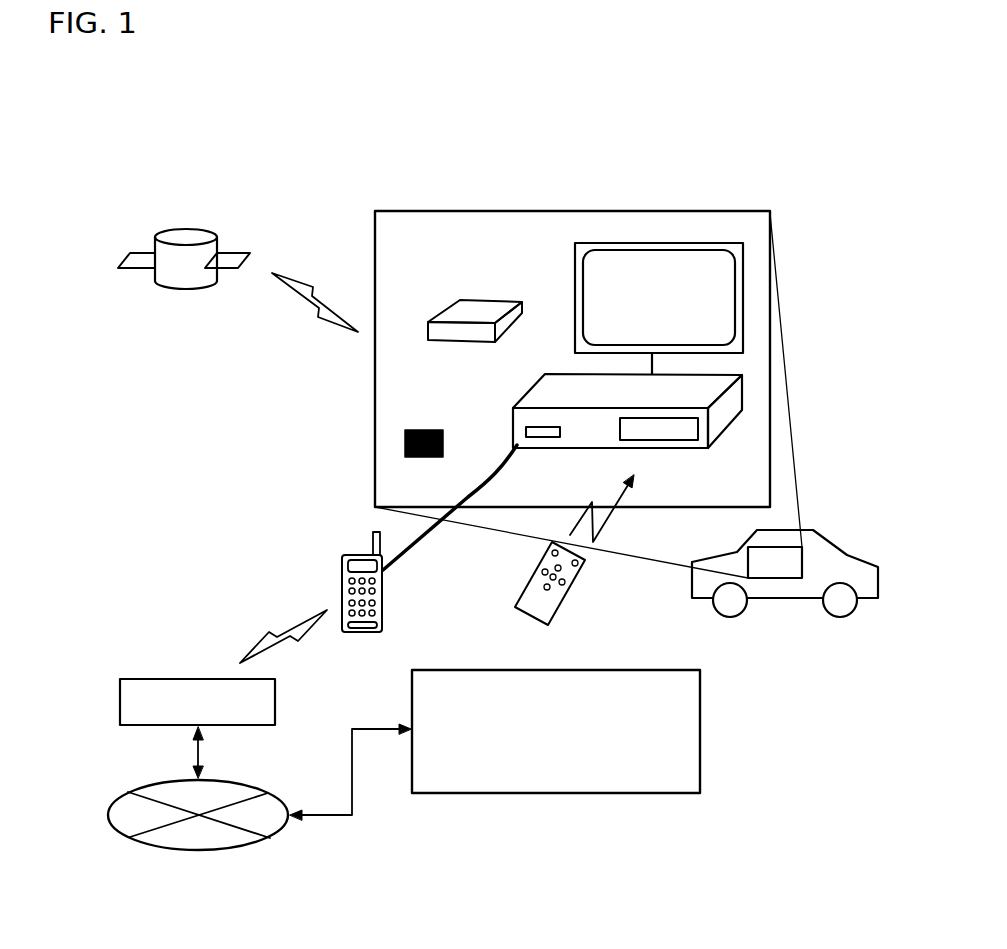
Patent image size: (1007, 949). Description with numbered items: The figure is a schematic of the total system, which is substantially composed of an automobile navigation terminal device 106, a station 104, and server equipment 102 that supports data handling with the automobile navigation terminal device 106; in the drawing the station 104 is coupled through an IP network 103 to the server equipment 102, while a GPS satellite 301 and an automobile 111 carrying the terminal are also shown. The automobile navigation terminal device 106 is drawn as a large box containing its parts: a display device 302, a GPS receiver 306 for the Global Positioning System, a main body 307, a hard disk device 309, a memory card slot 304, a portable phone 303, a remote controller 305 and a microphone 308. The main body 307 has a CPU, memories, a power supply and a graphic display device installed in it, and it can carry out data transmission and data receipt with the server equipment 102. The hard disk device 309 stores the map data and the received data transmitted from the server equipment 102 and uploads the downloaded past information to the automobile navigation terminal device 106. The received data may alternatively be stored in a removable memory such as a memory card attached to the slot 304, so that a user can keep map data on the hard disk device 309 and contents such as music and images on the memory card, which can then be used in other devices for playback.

The server equipment 102 is at (702, 733).
The IP network 103 is at (140, 842).
The station 104 is at (138, 678).
The automobile navigation terminal device 106 is at (375, 397).
The automobile 111 is at (785, 588).
The GPS satellite 301 is at (177, 290).
The display device 302 is at (575, 287).
The portable phone 303 is at (368, 565).
The memory card slot 304 is at (621, 440).
The remote controller 305 is at (530, 583).
The GPS receiver 306 is at (463, 310).
The main body 307 is at (550, 445).
The microphone 308 is at (433, 430).
The hard disk device 309 is at (658, 440).